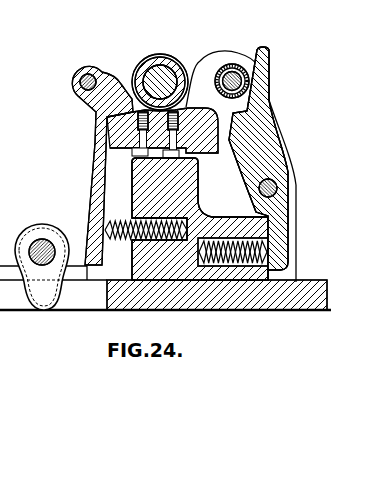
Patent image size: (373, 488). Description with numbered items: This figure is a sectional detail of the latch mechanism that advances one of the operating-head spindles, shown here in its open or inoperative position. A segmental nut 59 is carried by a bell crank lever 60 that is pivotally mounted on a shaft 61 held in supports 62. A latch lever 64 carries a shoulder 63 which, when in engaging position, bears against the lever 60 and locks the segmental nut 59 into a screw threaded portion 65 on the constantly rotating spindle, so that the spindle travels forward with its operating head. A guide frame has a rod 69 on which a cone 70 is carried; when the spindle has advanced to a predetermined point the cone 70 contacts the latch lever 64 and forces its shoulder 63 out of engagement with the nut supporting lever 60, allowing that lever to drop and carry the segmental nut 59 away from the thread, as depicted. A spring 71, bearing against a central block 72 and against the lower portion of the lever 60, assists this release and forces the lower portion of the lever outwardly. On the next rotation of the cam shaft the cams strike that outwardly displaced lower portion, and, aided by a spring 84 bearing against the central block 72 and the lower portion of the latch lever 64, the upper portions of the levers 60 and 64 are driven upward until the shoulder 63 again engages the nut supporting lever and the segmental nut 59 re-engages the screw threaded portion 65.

The segmental nut 59 is at (133, 112).
The bell crank lever 60 is at (93, 144).
The shaft 61 is at (88, 73).
The supports 62 is at (223, 52).
The shoulder 63 is at (232, 144).
The latch lever 64 is at (271, 84).
The screw threaded portion 65 is at (176, 62).
The rod 69 is at (243, 77).
The cone 70 is at (238, 66).
The spring 71 is at (112, 222).
The central block 72 is at (197, 194).
The spring 84 is at (234, 258).